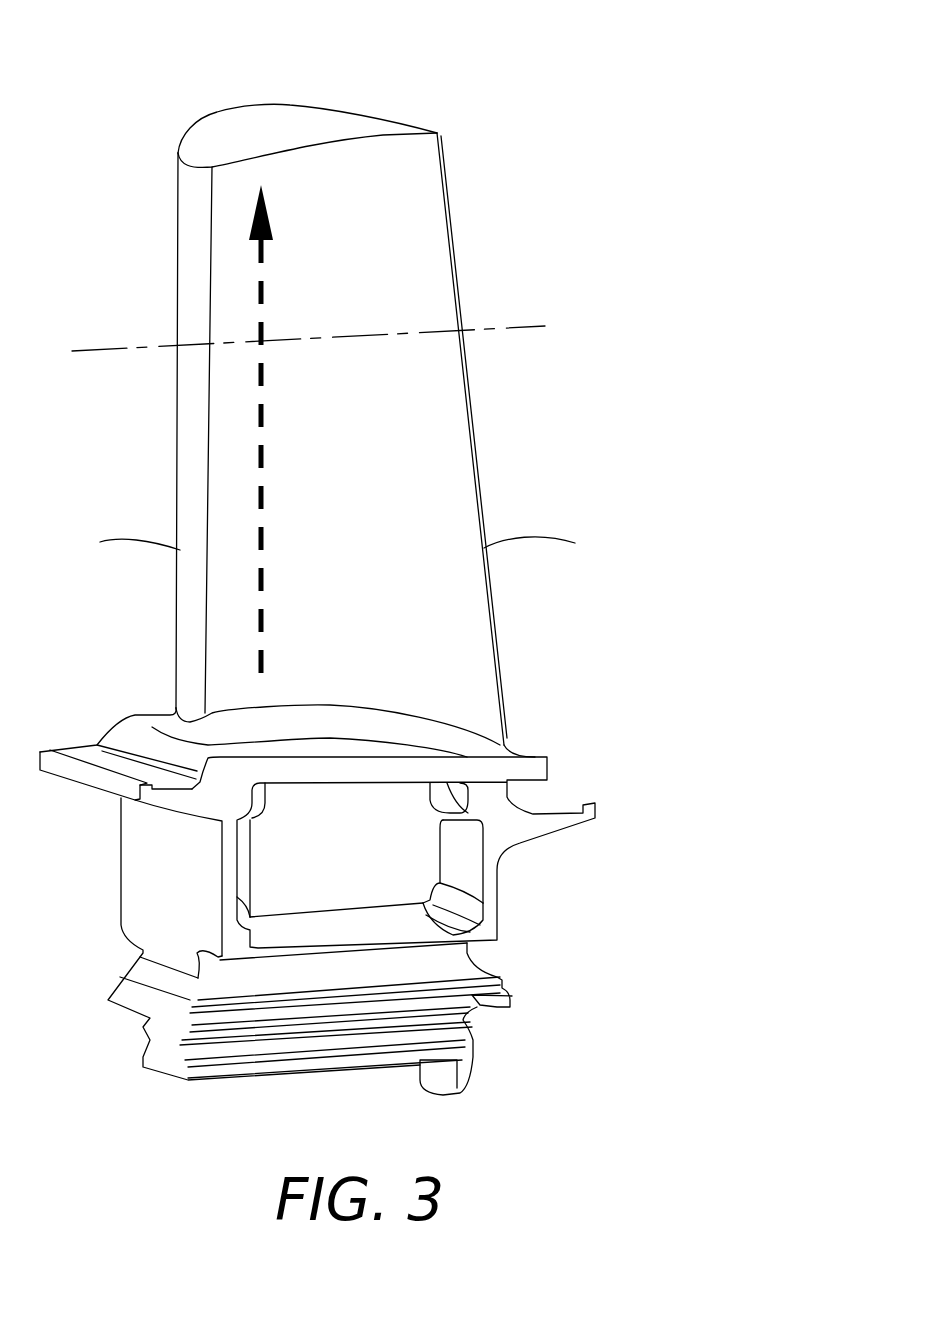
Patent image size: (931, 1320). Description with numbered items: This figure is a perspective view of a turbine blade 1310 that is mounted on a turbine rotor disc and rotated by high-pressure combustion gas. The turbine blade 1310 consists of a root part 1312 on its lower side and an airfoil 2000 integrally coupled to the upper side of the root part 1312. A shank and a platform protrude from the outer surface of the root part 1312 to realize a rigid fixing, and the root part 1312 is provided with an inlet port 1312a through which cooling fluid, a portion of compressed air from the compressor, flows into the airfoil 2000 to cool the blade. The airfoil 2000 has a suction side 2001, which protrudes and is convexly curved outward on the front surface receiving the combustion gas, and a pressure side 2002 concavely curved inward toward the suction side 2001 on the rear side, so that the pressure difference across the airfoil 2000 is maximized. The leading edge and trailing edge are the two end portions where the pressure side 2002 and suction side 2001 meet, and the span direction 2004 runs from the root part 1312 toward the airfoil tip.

The turbine blade 1310 is at (313, 44).
The airfoil 2000 is at (407, 283).
The suction side 2001 is at (387, 118).
The pressure side 2002 is at (390, 182).
The span direction 2004 is at (262, 453).
The root part 1312 is at (533, 923).
The inlet port 1312a is at (420, 848).